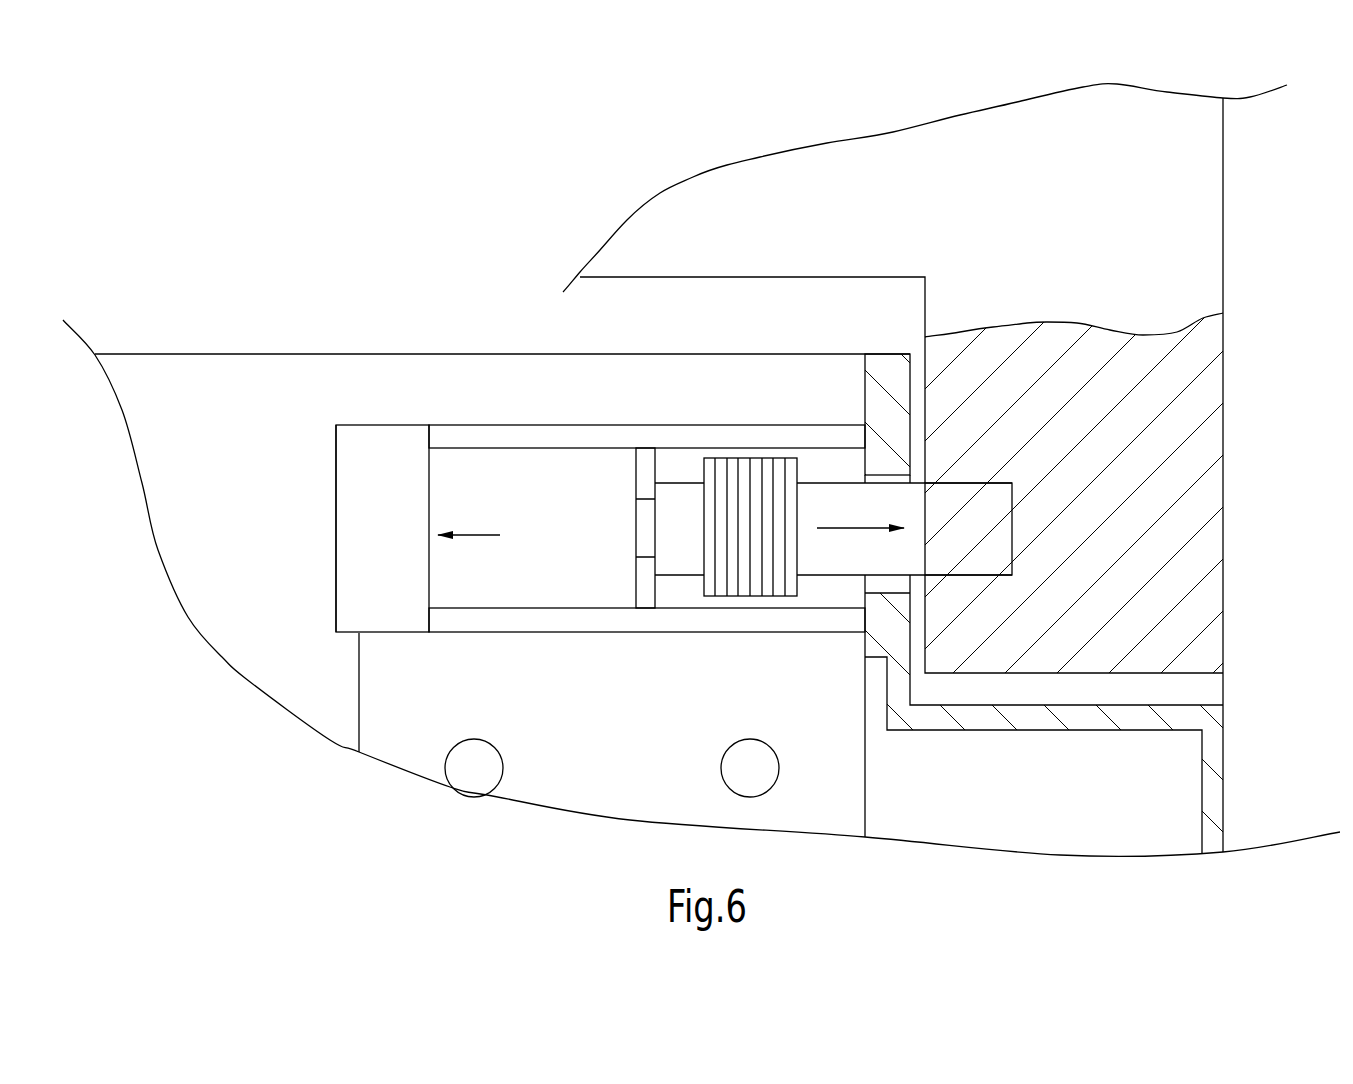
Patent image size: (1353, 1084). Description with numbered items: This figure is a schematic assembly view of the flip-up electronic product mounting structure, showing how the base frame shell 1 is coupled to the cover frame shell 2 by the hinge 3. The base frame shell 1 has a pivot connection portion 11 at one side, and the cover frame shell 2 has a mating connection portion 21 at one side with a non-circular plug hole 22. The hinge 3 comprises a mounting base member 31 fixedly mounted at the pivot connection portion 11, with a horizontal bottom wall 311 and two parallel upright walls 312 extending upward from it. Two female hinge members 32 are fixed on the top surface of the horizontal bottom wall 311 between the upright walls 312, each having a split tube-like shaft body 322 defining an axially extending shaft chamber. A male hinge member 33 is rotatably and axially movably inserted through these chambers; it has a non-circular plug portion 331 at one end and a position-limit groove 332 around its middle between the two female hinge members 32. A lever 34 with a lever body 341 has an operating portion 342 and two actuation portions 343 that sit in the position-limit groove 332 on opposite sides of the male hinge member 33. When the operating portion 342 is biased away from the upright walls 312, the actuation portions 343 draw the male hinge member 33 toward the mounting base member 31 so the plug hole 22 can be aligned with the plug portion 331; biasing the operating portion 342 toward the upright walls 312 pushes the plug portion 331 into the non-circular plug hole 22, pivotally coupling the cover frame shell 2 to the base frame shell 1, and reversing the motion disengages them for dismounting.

The base frame shell 1 is at (265, 355).
The pivot connection portion 11 is at (360, 354).
The cover frame shell 2 is at (1228, 258).
The mating connection portion 21 is at (1217, 537).
The non-circular plug hole 22 is at (1013, 527).
The hinge 3 is at (348, 680).
The mounting base member 31 is at (365, 717).
The horizontal bottom wall 311 is at (833, 458).
The upright wall 312 is at (520, 425).
The female hinge member 32 is at (710, 450).
The split tube-like shaft body 322 is at (767, 457).
The male hinge member 33 is at (681, 577).
The non-circular plug portion 331 is at (993, 560).
The position-limit groove 332 is at (647, 543).
The lever 34 is at (318, 492).
The lever body 341 is at (505, 473).
The operating portion 342 is at (355, 453).
The actuation portion 343 is at (640, 465).